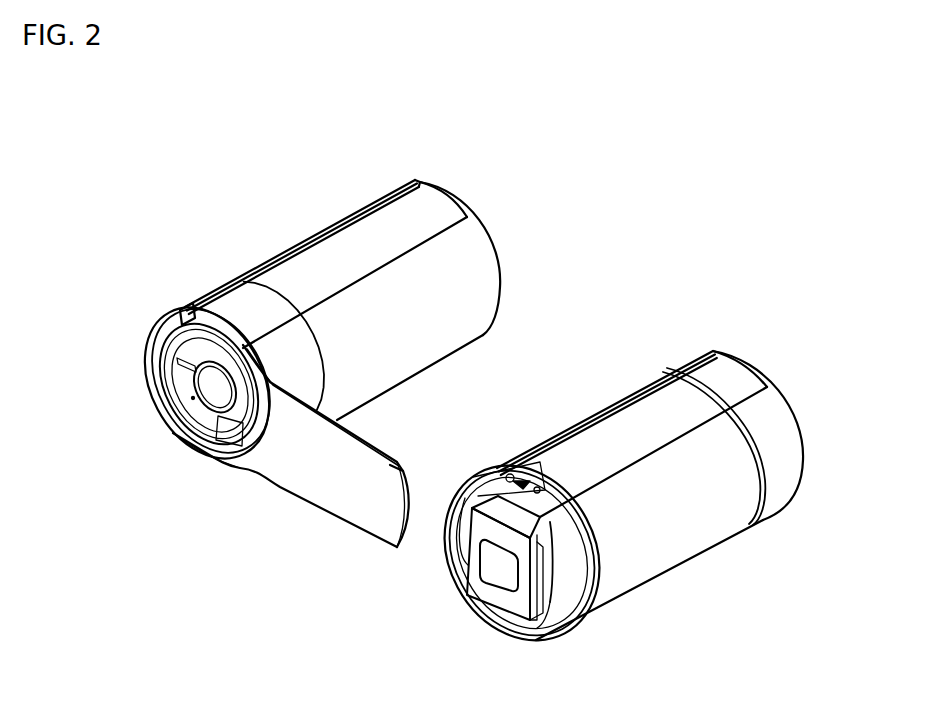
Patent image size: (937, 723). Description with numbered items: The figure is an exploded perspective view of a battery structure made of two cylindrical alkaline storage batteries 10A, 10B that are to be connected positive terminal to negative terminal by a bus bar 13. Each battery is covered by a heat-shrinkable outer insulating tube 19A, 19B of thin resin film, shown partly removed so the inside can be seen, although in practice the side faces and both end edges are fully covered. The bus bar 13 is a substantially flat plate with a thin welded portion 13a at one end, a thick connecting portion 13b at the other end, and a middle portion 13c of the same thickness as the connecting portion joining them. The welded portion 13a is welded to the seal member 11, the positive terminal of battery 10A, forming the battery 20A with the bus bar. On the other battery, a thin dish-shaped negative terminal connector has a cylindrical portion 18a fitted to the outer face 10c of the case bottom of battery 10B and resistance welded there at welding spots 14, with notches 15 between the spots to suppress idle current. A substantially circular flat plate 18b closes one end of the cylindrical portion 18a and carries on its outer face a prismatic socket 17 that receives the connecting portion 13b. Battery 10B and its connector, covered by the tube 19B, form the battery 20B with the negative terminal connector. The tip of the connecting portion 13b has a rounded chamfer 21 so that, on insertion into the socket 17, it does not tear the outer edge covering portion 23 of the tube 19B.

The battery 10A is at (340, 253).
The battery 10B is at (657, 420).
The outer face of the battery case bottom 10c is at (543, 489).
The seal member 11 is at (190, 358).
The bus bar 13 is at (292, 468).
The welded portion 13a is at (190, 390).
The connecting portion 13b is at (363, 500).
The middle portion 13c is at (280, 447).
The welding spots 14 is at (540, 488).
The notches 15 is at (483, 540).
The prismatic socket 17 is at (487, 593).
The cylindrical portion 18a is at (572, 535).
The flat plate 18b is at (543, 613).
The outer insulating tube 19A is at (333, 347).
The outer insulating tube 19B is at (700, 483).
The battery with the bus bar 20A is at (490, 230).
The battery with the negative terminal connector 20B is at (780, 393).
The chamfer 21 is at (407, 480).
The outer edge covering portion 23 is at (573, 630).